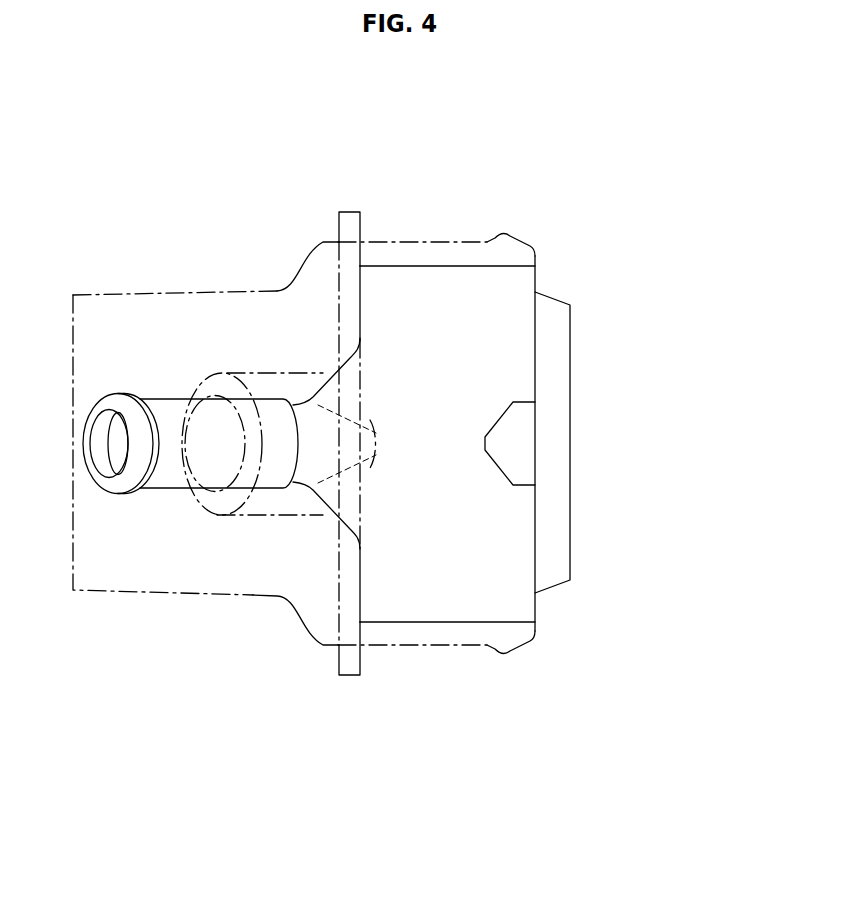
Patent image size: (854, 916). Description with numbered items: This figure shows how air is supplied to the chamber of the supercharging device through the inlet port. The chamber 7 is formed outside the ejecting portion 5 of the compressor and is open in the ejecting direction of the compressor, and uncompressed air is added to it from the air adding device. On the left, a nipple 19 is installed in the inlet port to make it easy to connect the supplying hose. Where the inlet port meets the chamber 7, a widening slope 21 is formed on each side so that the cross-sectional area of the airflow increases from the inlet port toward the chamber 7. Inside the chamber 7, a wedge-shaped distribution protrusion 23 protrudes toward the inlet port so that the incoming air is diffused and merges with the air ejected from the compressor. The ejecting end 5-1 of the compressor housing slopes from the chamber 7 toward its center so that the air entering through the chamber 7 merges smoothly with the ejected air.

The ejecting portion 5 is at (449, 672).
The ejecting end 5-1 is at (562, 302).
The chamber 7 is at (452, 320).
The nipple 19 is at (163, 399).
The widening slope 21 is at (323, 373).
The distribution protrusion 23 is at (520, 445).